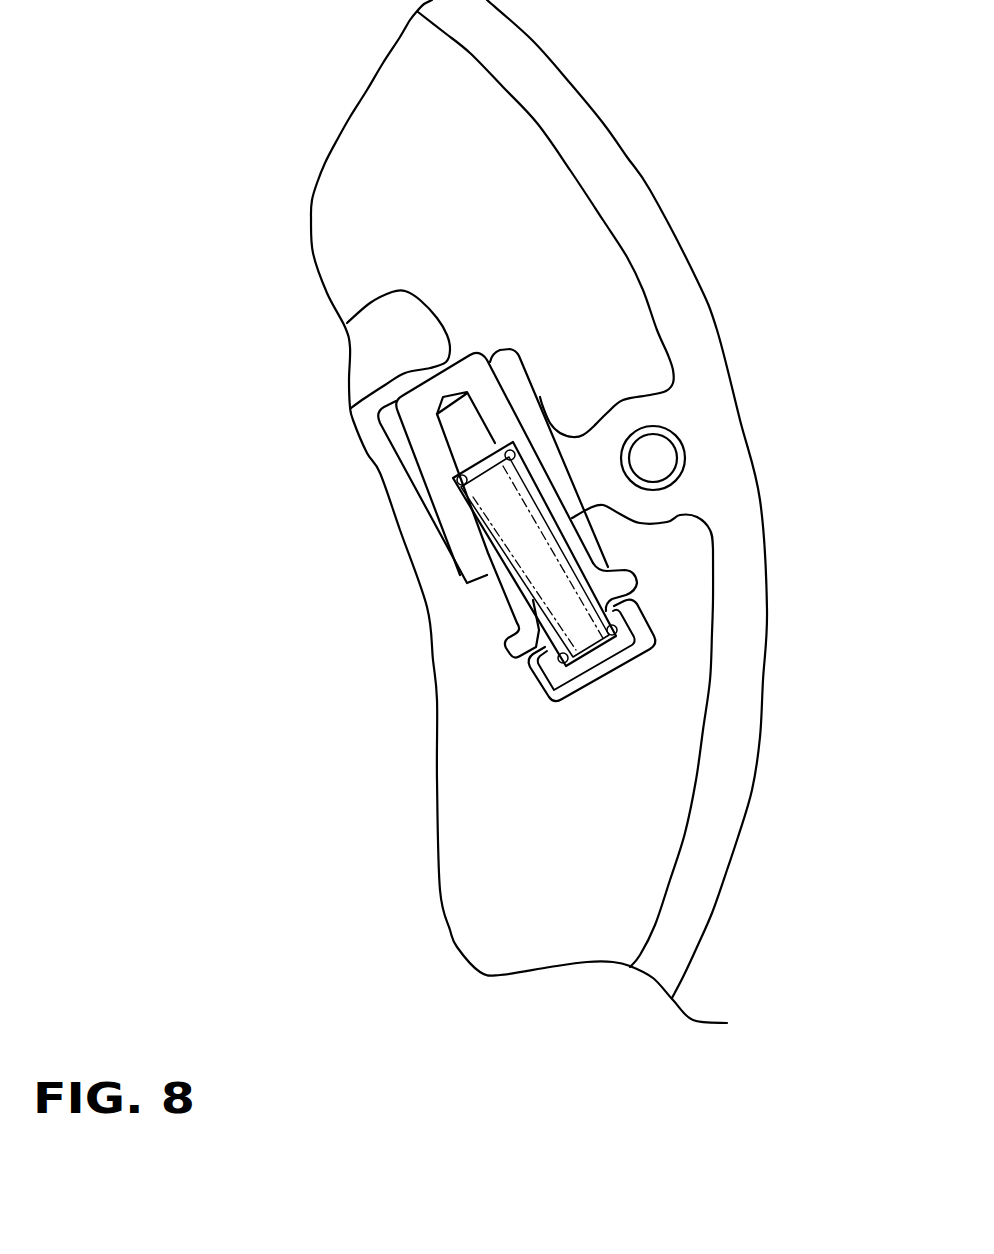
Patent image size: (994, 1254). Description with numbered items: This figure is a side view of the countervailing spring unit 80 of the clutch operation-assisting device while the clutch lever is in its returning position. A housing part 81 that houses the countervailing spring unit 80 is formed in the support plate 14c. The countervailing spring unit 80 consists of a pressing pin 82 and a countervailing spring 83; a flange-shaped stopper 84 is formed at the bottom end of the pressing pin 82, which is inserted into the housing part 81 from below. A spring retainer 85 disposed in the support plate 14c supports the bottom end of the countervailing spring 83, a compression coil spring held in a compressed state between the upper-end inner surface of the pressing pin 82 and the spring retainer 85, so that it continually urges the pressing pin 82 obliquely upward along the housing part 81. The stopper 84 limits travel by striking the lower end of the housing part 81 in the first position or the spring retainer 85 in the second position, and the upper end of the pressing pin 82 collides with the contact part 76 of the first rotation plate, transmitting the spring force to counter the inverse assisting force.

The support plate 14c is at (666, 499).
The contact part 76 is at (417, 354).
The countervailing spring unit 80 is at (498, 789).
The housing part 81 is at (581, 281).
The pressing pin 82 is at (502, 441).
The countervailing spring 83 is at (662, 554).
The stopper 84 is at (741, 615).
The spring retainer 85 is at (697, 696).